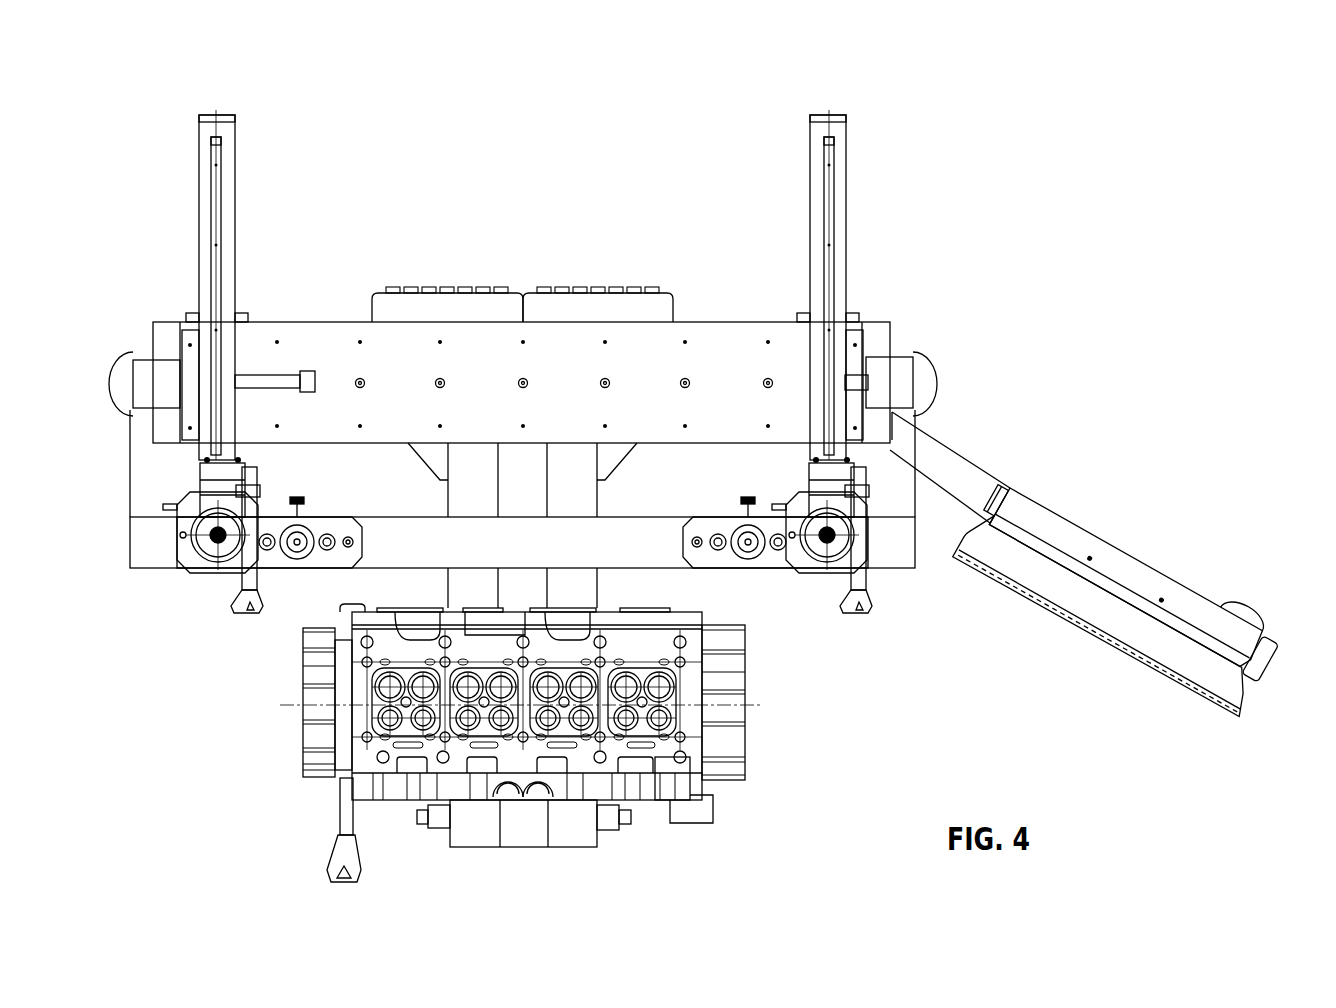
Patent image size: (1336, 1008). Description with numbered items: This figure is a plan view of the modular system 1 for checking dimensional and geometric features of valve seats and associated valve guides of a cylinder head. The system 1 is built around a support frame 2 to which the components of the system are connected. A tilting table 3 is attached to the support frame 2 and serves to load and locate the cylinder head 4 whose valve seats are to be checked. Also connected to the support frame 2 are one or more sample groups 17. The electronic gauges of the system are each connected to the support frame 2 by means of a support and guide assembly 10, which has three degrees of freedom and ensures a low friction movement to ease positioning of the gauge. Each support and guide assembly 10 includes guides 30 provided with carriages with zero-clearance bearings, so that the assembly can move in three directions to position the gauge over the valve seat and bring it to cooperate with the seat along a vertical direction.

The modular system 1 is at (432, 147).
The support frame 2 is at (337, 347).
The tilting table 3 is at (284, 722).
The cylinder head 4 is at (677, 782).
The support and guide assembly 10 is at (212, 583).
The sample group 17 is at (707, 525).
The guide 30 is at (223, 128).